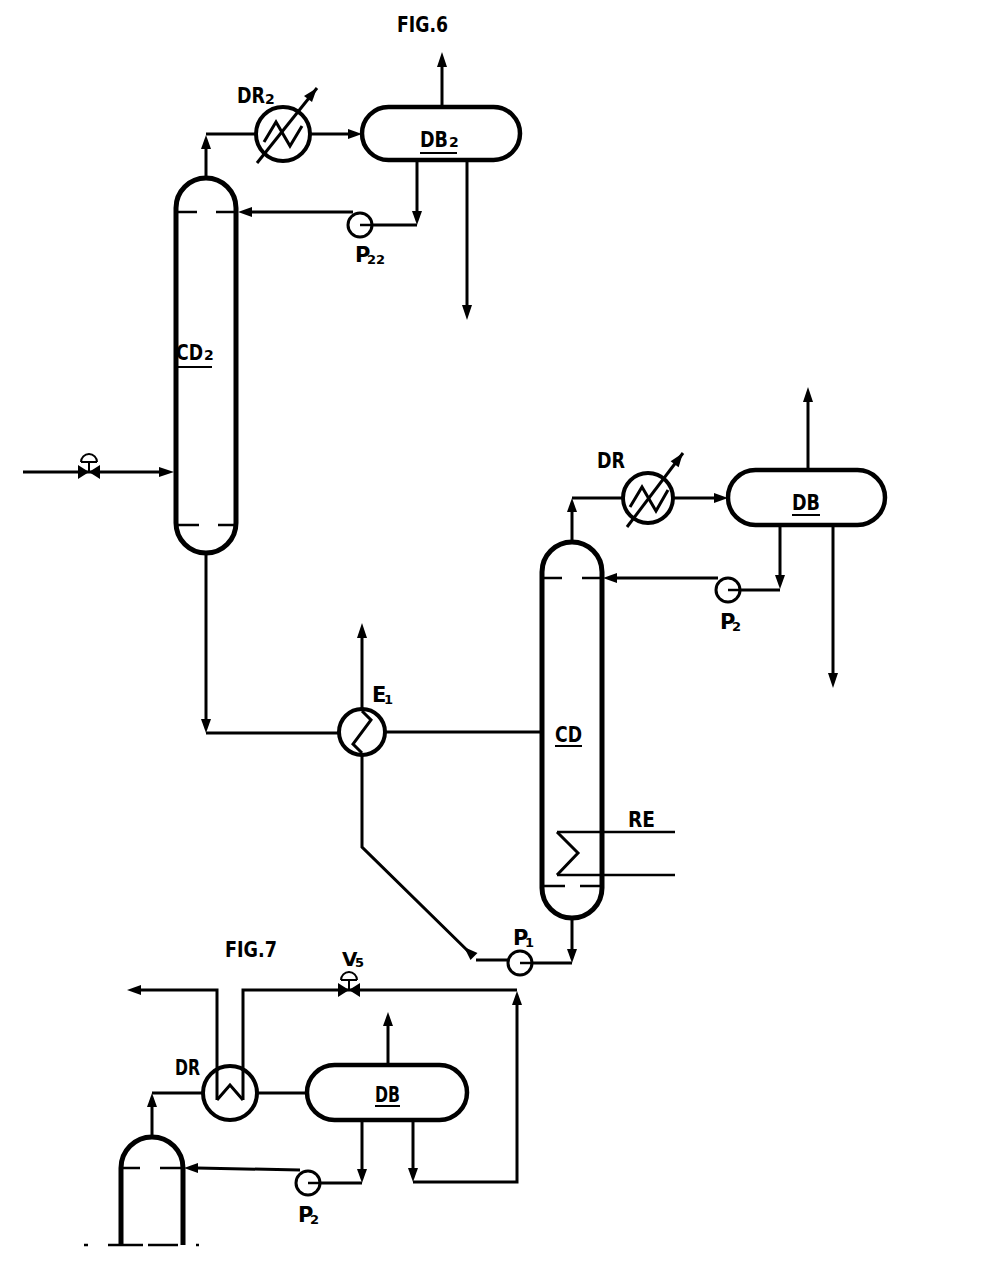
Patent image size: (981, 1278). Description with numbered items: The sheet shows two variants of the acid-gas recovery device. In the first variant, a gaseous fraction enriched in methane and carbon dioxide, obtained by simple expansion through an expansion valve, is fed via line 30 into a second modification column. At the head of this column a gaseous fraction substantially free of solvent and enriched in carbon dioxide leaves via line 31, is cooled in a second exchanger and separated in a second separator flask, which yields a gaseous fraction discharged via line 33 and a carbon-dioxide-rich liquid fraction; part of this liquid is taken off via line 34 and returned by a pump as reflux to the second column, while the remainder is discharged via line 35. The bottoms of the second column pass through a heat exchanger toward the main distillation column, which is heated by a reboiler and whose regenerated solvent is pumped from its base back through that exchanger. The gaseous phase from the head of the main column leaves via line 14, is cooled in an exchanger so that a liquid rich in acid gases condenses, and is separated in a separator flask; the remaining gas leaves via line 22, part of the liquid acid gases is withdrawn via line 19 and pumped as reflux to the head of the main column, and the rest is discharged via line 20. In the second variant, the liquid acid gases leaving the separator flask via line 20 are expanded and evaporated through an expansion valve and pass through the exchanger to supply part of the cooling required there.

In FIG. 6, the line 14 is at (571, 496).
In FIG. 7, the line 14 is at (151, 1092).
In FIG. 6, the line 19 is at (770, 590).
In FIG. 7, the line 19 is at (340, 1184).
In FIG. 6, the line 20 is at (833, 662).
In FIG. 7, the line 20 is at (458, 1183).
In FIG. 6, the line 22 is at (806, 424).
In FIG. 7, the line 22 is at (388, 1046).
In FIG. 6, the line 30 is at (127, 474).
In FIG. 6, the line 31 is at (205, 134).
In FIG. 6, the line 33 is at (442, 80).
In FIG. 6, the line 34 is at (400, 225).
In FIG. 6, the line 35 is at (467, 300).